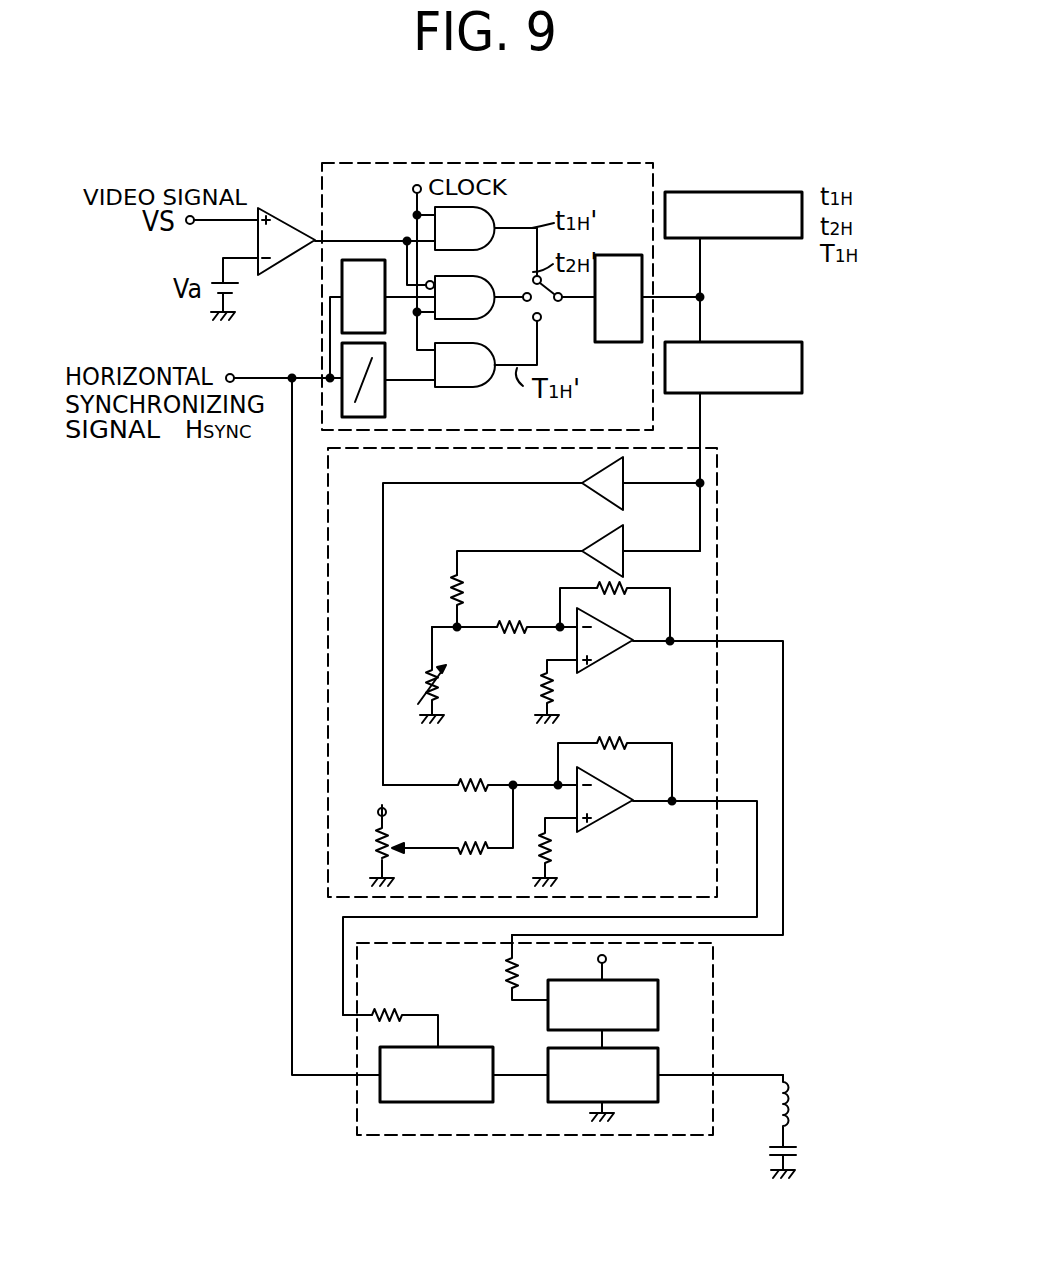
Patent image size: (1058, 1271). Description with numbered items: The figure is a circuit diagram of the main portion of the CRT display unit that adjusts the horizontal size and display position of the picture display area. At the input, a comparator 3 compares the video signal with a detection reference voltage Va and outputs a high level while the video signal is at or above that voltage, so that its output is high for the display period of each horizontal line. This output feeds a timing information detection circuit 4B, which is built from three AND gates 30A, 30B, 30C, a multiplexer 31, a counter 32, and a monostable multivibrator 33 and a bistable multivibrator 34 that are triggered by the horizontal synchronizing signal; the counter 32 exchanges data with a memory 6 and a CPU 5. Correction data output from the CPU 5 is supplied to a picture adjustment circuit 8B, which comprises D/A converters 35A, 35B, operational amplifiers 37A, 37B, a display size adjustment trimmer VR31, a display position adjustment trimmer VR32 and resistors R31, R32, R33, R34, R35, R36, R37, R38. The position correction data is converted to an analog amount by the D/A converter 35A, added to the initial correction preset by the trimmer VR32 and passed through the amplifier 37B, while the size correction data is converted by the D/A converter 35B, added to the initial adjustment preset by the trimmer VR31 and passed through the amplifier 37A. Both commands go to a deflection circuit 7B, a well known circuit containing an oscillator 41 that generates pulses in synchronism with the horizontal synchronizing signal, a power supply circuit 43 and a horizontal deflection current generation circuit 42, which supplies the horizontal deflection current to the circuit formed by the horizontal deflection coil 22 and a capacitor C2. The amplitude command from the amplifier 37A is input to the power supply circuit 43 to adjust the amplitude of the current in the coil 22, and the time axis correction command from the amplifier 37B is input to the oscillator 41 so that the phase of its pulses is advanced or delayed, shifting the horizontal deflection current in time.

The comparator 3 is at (297, 215).
The timing information detection circuit 4B is at (417, 163).
The monostable multivibrator 33 is at (370, 262).
The bistable multivibrator 34 is at (385, 400).
The AND gate 30A is at (497, 217).
The AND gate 30B is at (480, 273).
The AND gate 30C is at (477, 341).
The multiplexer 31 is at (549, 302).
The counter 32 is at (655, 283).
The memory 6 is at (737, 190).
The CPU 5 is at (752, 340).
The picture adjustment circuit 8B is at (703, 450).
The D/A converter 35A is at (606, 497).
The D/A converter 35B is at (627, 530).
The resistor R31 is at (470, 592).
The resistor R32 is at (495, 614).
The resistor R33 is at (627, 582).
The resistor R34 is at (560, 694).
The display size adjustment trimmer VR31 is at (448, 680).
The operational amplifier 37A is at (615, 653).
The resistor R35 is at (480, 765).
The resistor R36 is at (603, 730).
The resistor R37 is at (558, 853).
The resistor R38 is at (458, 863).
The display position adjustment trimmer VR32 is at (395, 835).
The operational amplifier 37B is at (615, 813).
The deflection circuit 7B is at (713, 960).
The power supply circuit 43 is at (658, 993).
The oscillator 41 is at (405, 1102).
The horizontal deflection current generation circuit 42 is at (570, 1102).
The horizontal deflection coil 22 is at (798, 1108).
The capacitor C2 is at (800, 1150).